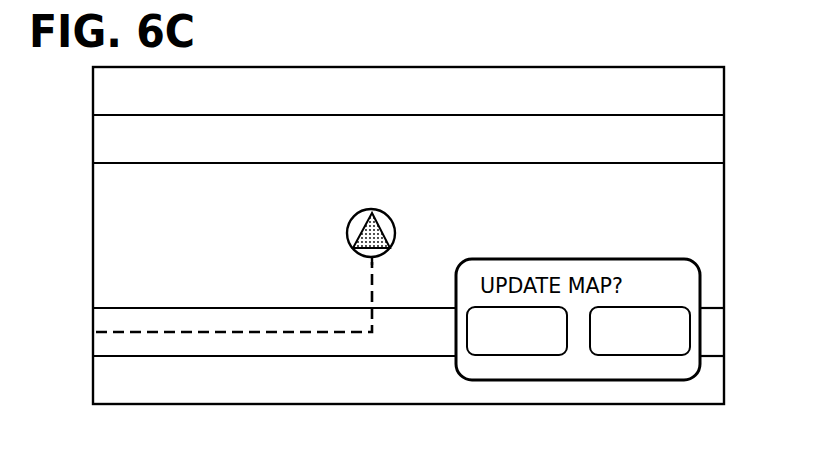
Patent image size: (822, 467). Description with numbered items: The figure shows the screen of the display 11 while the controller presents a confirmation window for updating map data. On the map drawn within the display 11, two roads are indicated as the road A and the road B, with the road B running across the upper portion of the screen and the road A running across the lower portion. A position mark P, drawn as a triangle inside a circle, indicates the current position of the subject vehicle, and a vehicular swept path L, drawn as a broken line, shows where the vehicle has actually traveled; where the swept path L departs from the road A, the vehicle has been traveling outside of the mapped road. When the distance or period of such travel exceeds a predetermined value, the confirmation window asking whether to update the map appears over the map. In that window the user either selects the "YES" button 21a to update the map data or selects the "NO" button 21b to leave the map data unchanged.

The display 11 is at (713, 404).
The road B is at (516, 115).
The road A is at (167, 308).
The vehicular swept path L is at (240, 332).
The position mark P is at (395, 232).
The "YES" button 21a is at (518, 355).
The "NO" button 21b is at (640, 355).